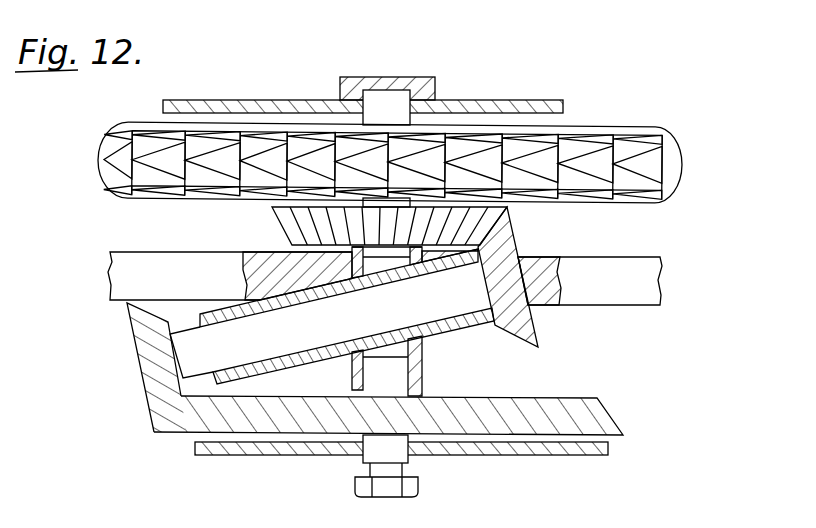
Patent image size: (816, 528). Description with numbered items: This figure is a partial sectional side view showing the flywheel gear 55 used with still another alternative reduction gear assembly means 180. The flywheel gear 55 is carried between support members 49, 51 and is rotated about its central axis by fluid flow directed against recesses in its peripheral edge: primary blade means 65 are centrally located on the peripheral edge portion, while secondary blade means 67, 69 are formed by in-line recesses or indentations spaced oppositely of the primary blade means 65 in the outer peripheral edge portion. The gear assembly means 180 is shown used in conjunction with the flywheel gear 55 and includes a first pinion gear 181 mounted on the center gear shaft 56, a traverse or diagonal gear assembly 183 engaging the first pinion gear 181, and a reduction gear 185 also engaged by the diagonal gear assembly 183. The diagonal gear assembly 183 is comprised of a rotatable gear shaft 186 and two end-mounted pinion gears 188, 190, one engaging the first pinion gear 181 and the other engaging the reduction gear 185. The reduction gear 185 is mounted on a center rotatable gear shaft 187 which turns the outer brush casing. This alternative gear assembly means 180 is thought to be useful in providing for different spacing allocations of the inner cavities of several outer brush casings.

The support member 49 is at (222, 102).
The support member 51 is at (292, 448).
The flywheel gear 55 is at (107, 175).
The center gear shaft 56 is at (385, 100).
The primary blade means 65 is at (142, 158).
The secondary blade means 67 is at (275, 132).
The secondary blade means 69 is at (222, 190).
The gear assembly means 180 is at (545, 333).
The first pinion gear 181 is at (290, 223).
The diagonal gear assembly 183 is at (187, 337).
The reduction gear 185 is at (603, 417).
The rotatable gear shaft 186 is at (302, 332).
The center rotatable gear shaft 187 is at (400, 380).
The pinion gear 188 is at (503, 243).
The pinion gear 190 is at (143, 348).